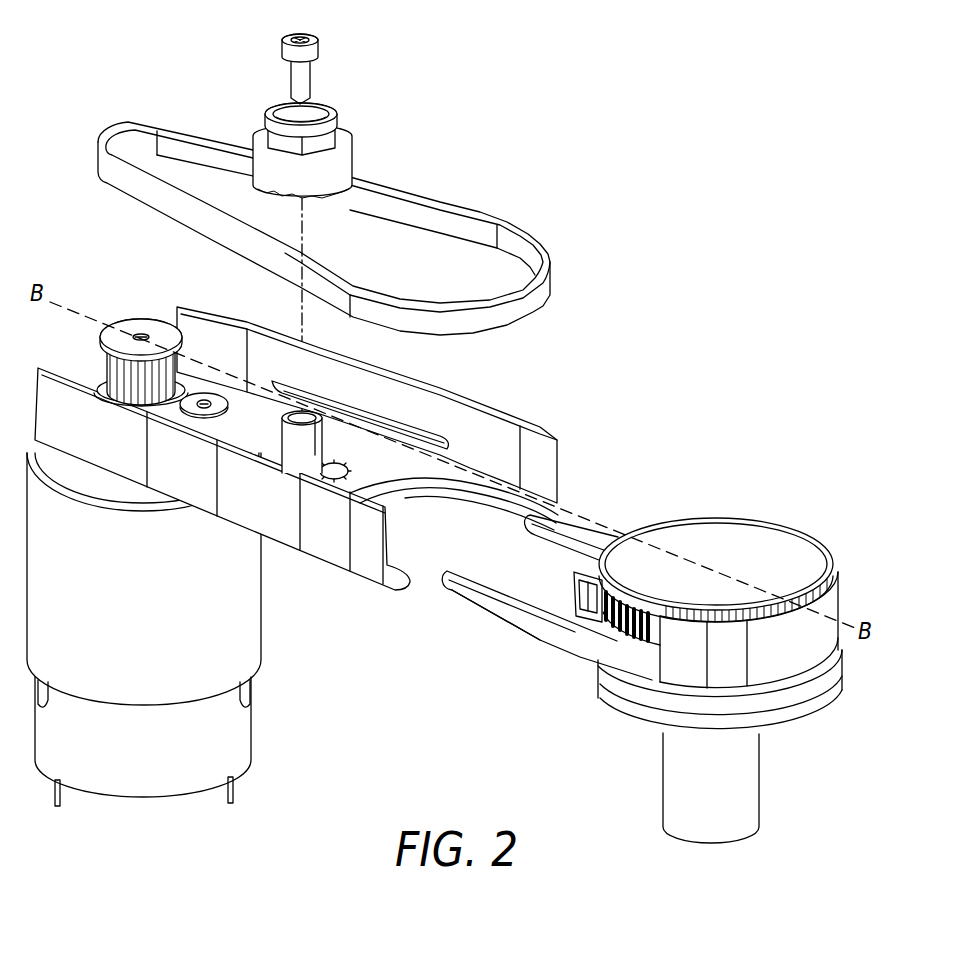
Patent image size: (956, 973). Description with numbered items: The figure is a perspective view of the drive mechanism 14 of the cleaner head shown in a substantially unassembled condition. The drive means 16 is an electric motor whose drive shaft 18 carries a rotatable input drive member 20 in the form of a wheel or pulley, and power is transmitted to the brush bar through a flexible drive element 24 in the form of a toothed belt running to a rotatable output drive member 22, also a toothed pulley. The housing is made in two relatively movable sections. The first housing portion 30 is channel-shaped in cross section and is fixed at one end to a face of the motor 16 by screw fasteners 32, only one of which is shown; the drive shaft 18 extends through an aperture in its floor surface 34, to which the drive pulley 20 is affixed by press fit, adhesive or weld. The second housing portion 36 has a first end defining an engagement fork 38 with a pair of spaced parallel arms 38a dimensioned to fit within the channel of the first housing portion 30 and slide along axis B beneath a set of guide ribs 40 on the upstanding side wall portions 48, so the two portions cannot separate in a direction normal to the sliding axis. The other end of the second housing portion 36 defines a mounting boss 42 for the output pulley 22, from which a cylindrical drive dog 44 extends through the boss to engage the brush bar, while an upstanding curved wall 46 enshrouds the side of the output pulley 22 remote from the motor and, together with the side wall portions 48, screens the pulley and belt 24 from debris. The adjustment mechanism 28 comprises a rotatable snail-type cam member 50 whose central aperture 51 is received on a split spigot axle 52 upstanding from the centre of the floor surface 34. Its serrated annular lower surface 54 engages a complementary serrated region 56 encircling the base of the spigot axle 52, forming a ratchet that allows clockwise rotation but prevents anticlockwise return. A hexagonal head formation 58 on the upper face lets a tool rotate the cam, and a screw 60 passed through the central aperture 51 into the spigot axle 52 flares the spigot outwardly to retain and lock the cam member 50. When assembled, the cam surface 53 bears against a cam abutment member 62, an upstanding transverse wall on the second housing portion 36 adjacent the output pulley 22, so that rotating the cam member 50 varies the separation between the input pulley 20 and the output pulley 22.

The drive mechanism 14 is at (670, 286).
The drive means 16 is at (262, 620).
The drive shaft 18 is at (161, 417).
The input drive member 20 is at (140, 328).
The output drive member 22 is at (736, 521).
The flexible drive element 24 is at (482, 211).
The adjustment mechanism 28 is at (408, 124).
The first housing portion 30 is at (468, 395).
The screw fastener 32 is at (204, 392).
The floor surface 34 is at (426, 475).
The second housing portion 36 is at (553, 640).
The engagement fork 38 is at (619, 508).
The arms 38a is at (568, 516).
The guide ribs 40 is at (396, 418).
The mounting boss 42 is at (632, 648).
The drive dog 44 is at (760, 776).
The upstanding curved wall 46 is at (735, 678).
The upstanding side wall portions 48 is at (282, 533).
The cam member 50 is at (345, 128).
The central aperture 51 is at (295, 125).
The split spigot axle 52 is at (298, 455).
The cam surface 53 is at (345, 164).
The serrated annular lower surface 54 is at (328, 196).
The serrated region 56 is at (350, 470).
The head formation 58 is at (320, 104).
The screw 60 is at (282, 50).
The cam abutment member 62 is at (574, 584).